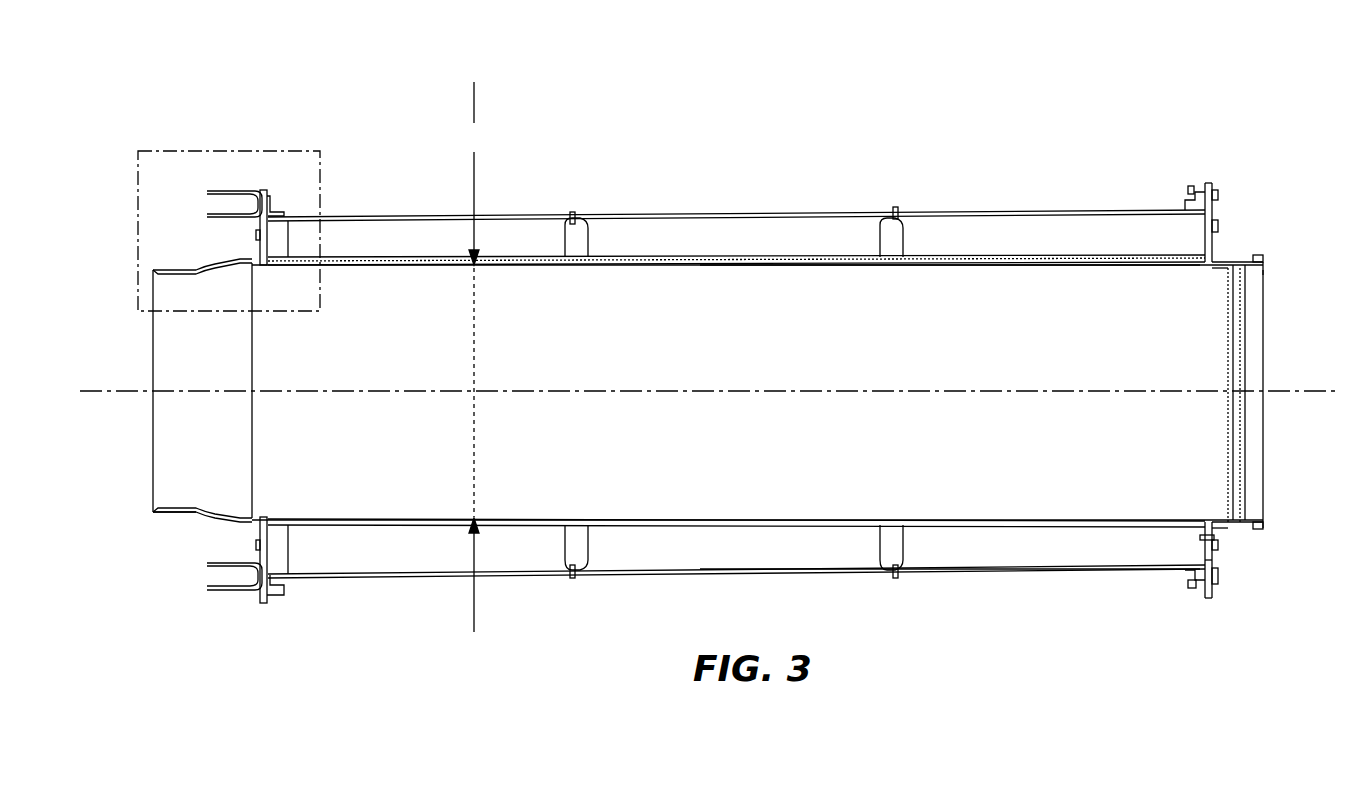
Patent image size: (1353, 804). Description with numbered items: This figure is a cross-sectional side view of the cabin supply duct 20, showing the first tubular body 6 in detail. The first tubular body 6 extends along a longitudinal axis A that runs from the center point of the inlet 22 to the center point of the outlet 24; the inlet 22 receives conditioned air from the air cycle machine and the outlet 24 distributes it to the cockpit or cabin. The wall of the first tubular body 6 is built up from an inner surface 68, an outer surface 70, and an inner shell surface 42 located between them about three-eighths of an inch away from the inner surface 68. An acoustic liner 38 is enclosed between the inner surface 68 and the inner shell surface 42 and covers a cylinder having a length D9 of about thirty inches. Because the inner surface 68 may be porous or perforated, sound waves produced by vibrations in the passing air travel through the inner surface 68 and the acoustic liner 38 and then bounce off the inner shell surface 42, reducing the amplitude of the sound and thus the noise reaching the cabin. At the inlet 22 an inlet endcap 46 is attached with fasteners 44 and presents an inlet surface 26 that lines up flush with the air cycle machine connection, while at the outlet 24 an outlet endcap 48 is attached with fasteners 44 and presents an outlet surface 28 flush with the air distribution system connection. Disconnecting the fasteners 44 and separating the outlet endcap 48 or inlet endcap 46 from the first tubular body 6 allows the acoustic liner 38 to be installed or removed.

The cabin supply duct 20 is at (352, 108).
The inlet 22 is at (1265, 450).
The outlet 24 is at (175, 445).
The inlet surface 26 is at (1265, 272).
The outlet surface 28 is at (148, 270).
The acoustic liner 38 is at (778, 258).
The inner shell surface 42 is at (405, 528).
The fasteners 44 is at (290, 594).
The inlet endcap 46 is at (1222, 556).
The outlet endcap 48 is at (185, 507).
The first tubular body 6 is at (552, 575).
The inner surface 68 is at (1090, 268).
The outer surface 70 is at (1000, 572).
The longitudinal axis A is at (122, 388).
The length D9 is at (477, 357).